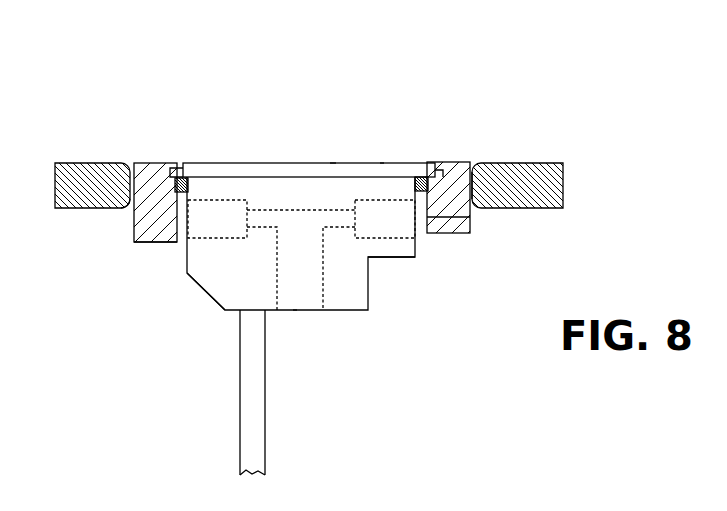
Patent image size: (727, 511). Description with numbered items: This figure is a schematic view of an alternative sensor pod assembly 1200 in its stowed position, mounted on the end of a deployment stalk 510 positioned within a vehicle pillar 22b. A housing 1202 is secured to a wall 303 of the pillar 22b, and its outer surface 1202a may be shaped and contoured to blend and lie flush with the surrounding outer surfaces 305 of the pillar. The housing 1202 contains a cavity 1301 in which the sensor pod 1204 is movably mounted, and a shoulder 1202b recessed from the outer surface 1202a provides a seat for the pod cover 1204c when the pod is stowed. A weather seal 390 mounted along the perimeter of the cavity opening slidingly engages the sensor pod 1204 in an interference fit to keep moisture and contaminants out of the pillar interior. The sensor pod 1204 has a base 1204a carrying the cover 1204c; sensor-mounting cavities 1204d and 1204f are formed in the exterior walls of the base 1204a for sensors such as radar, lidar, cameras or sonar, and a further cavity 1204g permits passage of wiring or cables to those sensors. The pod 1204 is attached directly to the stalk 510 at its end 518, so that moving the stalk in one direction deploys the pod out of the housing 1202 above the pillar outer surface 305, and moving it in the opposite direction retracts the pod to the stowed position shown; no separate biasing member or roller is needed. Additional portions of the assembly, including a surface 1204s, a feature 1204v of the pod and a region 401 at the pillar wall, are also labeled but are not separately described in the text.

The wall of the pillar 303 is at (93, 164).
The pillar outer surface 305 is at (548, 163).
The housing outer surface 1202a is at (150, 164).
The housing 1202 is at (453, 190).
The shoulder 1202b is at (165, 183).
The weather seal 390 is at (163, 209).
The sensor pod 1204 is at (278, 193).
The base 1204a is at (220, 277).
The cover 1204c is at (300, 164).
The sensor-mounting cavity 1204d is at (222, 205).
The sensor-mounting cavity 1204f is at (370, 217).
The wiring cavity 1204g is at (302, 270).
The housing surface 1204s is at (327, 164).
The housing vent 1204v is at (375, 253).
The sensor pod assembly 1200 is at (383, 117).
The pillar 22b is at (473, 187).
The cavity 1301 is at (470, 217).
The rounded edge 401 is at (128, 198).
The stalk end 518 is at (253, 338).
The stalk 510 is at (252, 423).